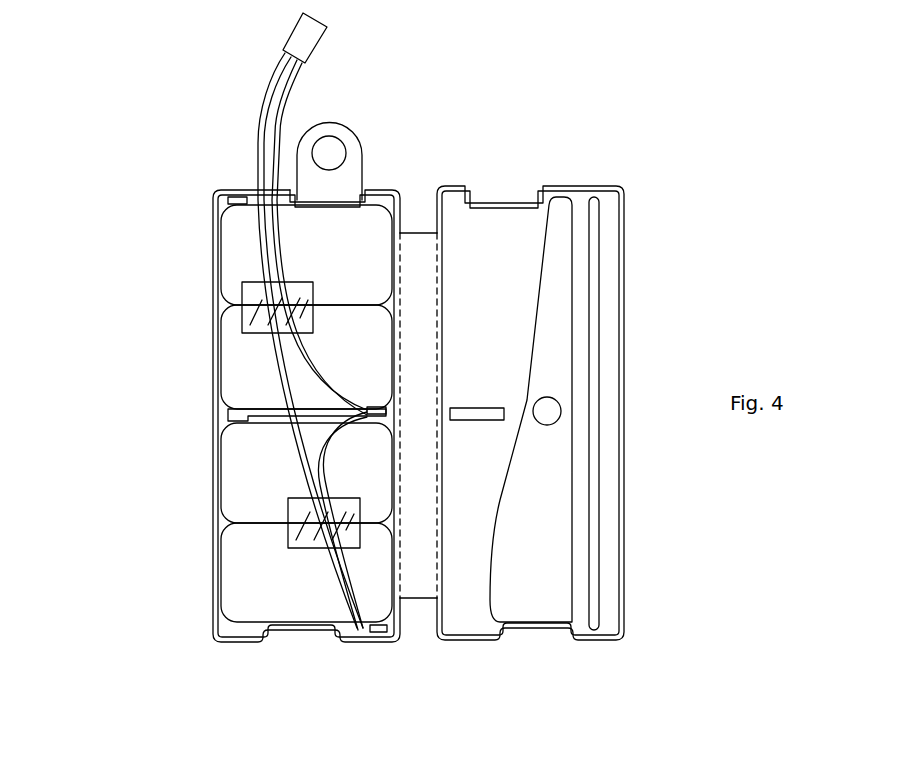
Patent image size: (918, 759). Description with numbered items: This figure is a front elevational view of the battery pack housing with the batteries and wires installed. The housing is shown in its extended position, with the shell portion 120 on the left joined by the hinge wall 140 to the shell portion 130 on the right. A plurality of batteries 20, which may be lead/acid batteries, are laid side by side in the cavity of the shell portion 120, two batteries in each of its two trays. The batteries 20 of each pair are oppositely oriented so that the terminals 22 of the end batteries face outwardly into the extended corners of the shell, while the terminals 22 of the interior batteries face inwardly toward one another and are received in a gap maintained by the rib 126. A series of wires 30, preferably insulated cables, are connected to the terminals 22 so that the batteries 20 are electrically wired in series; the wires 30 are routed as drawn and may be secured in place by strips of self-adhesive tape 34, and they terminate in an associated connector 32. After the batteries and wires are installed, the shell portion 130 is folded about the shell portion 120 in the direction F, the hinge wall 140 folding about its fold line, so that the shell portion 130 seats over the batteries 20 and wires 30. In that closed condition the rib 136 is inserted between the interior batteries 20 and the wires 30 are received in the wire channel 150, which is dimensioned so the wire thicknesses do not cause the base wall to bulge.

The shell portion 120 is at (206, 224).
The shell portion 130 is at (630, 287).
The hinge wall 140 is at (414, 230).
The wire channel 150 is at (553, 538).
The rib 136 is at (474, 408).
The rib 126 is at (232, 410).
The batteries 20 is at (230, 277).
The wires 30 is at (230, 497).
The terminals 22 is at (241, 197).
The connector 32 is at (320, 45).
The self-adhesive tape 34 is at (296, 290).
The folding direction F is at (624, 225).